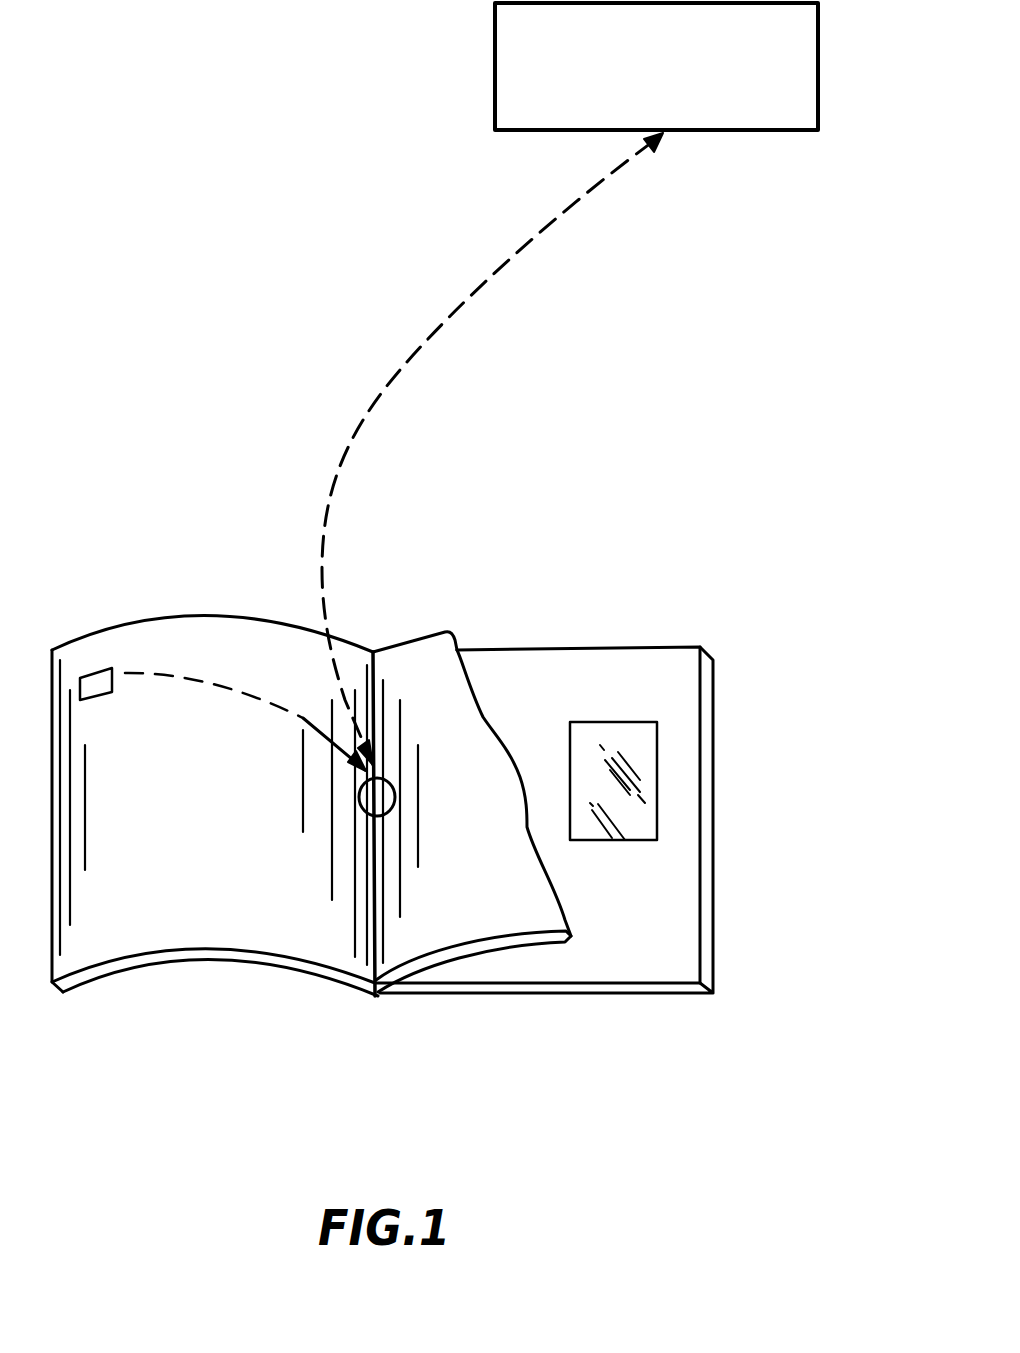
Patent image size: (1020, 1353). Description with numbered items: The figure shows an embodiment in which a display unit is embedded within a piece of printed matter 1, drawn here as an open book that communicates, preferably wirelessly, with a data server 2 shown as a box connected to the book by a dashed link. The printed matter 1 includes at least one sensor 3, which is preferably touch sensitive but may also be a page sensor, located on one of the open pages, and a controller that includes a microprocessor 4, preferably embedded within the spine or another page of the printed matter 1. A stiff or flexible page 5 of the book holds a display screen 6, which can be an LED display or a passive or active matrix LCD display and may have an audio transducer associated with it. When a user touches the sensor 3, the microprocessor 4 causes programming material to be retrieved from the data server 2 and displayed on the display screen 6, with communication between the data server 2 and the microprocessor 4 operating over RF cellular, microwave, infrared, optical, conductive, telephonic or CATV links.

The printed matter 1 is at (352, 642).
The data server 2 is at (820, 79).
The sensor 3 is at (98, 702).
The microprocessor 4 is at (390, 812).
The page 5 is at (705, 779).
The display screen 6 is at (617, 840).